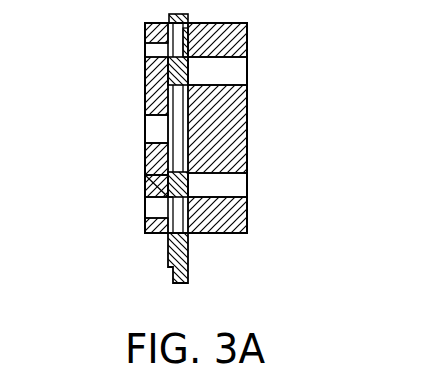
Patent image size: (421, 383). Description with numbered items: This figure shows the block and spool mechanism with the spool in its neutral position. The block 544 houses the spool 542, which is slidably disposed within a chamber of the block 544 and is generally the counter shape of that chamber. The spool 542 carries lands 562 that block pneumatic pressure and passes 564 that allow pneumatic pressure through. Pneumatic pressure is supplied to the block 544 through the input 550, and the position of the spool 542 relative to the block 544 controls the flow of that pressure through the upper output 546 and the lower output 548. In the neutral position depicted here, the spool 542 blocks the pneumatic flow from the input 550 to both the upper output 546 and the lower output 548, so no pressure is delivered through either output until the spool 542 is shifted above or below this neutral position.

The spool 542 is at (188, 259).
The block 544 is at (247, 220).
The upper output 546 is at (247, 68).
The lower output 548 is at (247, 184).
The input 550 is at (145, 130).
The lands 562 is at (152, 178).
The passes 564 is at (172, 45).